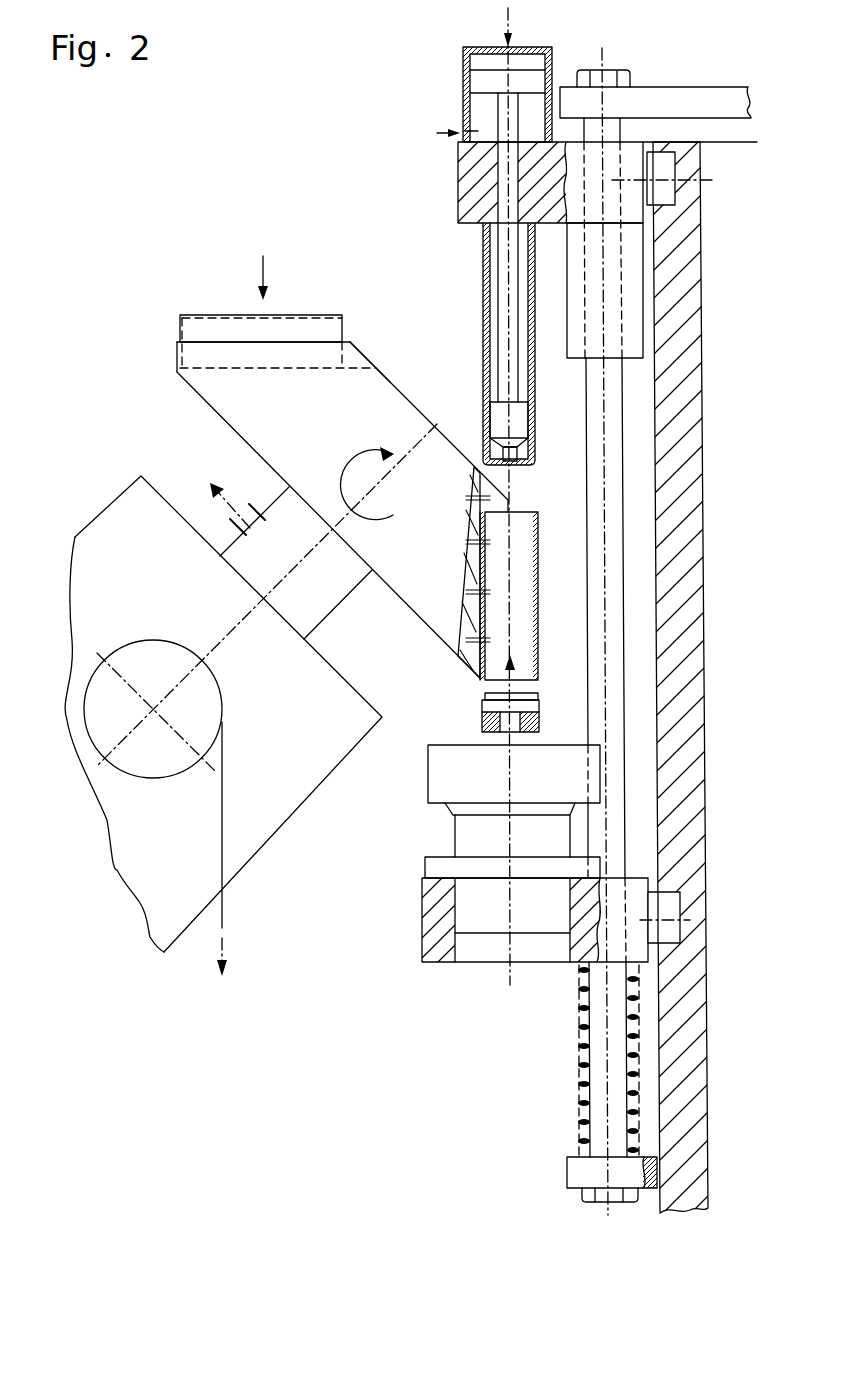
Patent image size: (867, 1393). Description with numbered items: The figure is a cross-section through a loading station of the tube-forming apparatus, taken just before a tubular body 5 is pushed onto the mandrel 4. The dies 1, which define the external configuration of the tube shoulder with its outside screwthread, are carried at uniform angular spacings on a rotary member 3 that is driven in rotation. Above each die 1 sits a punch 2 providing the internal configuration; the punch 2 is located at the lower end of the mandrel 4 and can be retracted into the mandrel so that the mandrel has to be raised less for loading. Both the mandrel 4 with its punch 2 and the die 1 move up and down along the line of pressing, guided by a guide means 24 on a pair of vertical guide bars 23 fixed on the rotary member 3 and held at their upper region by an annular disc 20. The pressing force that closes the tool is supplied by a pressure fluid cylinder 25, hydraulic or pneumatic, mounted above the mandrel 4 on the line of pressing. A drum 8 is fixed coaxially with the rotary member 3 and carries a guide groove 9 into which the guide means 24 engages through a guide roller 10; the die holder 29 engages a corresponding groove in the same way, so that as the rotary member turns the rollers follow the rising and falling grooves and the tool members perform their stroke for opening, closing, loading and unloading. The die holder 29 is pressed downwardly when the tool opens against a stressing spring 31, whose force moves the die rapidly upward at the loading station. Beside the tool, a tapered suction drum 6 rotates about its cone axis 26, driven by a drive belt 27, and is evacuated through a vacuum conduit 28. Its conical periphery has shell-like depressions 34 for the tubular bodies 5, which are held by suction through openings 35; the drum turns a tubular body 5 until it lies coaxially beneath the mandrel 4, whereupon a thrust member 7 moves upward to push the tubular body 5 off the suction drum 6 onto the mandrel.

The die 1 is at (436, 778).
The punch 2 is at (522, 418).
The rotary member 3 is at (580, 1170).
The mandrel 4 is at (483, 270).
The tubular body 5 is at (215, 326).
The suction drum 6 is at (390, 397).
The thrust member 7 is at (482, 723).
The drum 8 is at (692, 402).
The guide groove 9 is at (698, 153).
The guide roller 10 is at (668, 192).
The annular disc 20 is at (692, 95).
The guide bar 23 is at (597, 483).
The guide means 24 is at (415, 193).
The pressure fluid cylinder 25 is at (464, 78).
The cone axis 26 is at (237, 640).
The drive belt 27 is at (224, 784).
The vacuum conduit 28 is at (252, 508).
The die holder 29 is at (435, 923).
The stressing spring 31 is at (580, 1072).
The shell-like depression 34 is at (365, 349).
The opening 35 is at (467, 503).